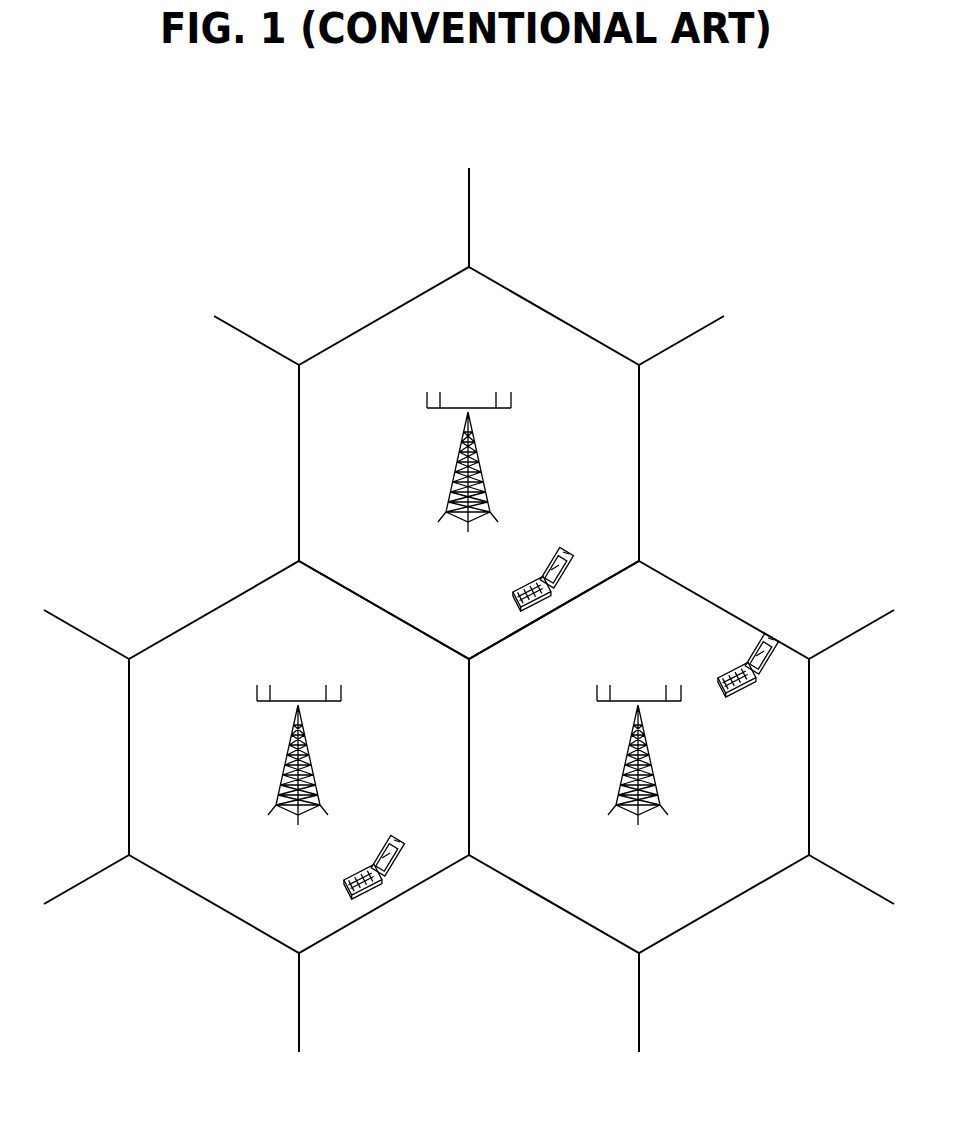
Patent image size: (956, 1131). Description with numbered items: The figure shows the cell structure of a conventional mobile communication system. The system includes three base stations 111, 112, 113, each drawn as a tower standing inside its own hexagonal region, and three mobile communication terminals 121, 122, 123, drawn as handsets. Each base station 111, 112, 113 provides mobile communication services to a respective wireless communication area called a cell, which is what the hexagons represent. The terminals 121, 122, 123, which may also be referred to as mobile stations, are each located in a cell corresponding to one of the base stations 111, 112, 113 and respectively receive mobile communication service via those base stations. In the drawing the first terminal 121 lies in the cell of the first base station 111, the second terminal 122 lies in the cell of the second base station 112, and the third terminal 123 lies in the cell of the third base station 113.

The base station 111 is at (282, 773).
The base station 112 is at (478, 460).
The base station 113 is at (655, 780).
The terminal 121 is at (380, 897).
The terminal 122 is at (572, 543).
The terminal 123 is at (772, 643).